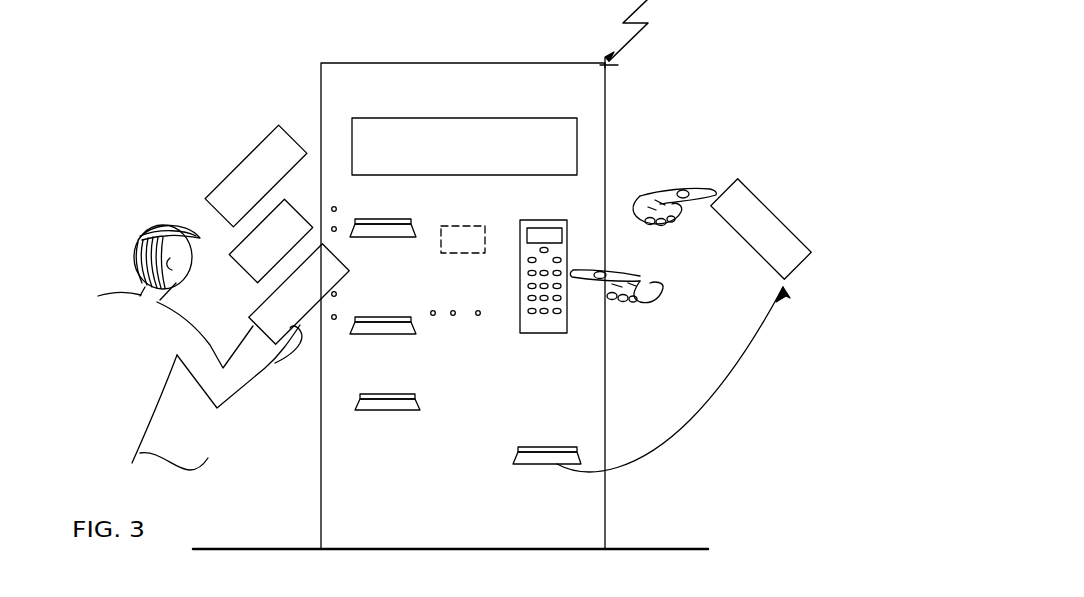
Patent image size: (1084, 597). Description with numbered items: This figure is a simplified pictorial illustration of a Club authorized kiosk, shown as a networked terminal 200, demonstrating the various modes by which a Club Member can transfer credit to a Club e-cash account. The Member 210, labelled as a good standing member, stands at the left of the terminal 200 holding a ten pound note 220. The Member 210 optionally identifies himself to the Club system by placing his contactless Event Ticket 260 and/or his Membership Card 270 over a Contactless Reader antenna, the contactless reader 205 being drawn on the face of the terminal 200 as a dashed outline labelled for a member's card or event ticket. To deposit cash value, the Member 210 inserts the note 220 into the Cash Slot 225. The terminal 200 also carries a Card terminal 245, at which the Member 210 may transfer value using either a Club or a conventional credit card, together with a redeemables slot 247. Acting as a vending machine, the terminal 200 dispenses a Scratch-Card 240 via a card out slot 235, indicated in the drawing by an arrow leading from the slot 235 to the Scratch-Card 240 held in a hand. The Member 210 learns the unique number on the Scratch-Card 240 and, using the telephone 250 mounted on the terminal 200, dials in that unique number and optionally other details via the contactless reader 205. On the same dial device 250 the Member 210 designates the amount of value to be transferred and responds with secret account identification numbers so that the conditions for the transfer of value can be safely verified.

The networked terminal 200 is at (428, 63).
The contactless reader 205 is at (487, 230).
The Member 210 is at (188, 347).
The £10 note 220 is at (301, 325).
The Cash Slot 225 is at (412, 238).
The slot 235 is at (532, 464).
The Scratch-Card 240 is at (780, 276).
The Card terminal 245 is at (411, 333).
The redeemables slot 247 is at (396, 410).
The telephone 250 is at (522, 333).
The Event Ticket 260 is at (250, 153).
The Membership Card 270 is at (256, 282).